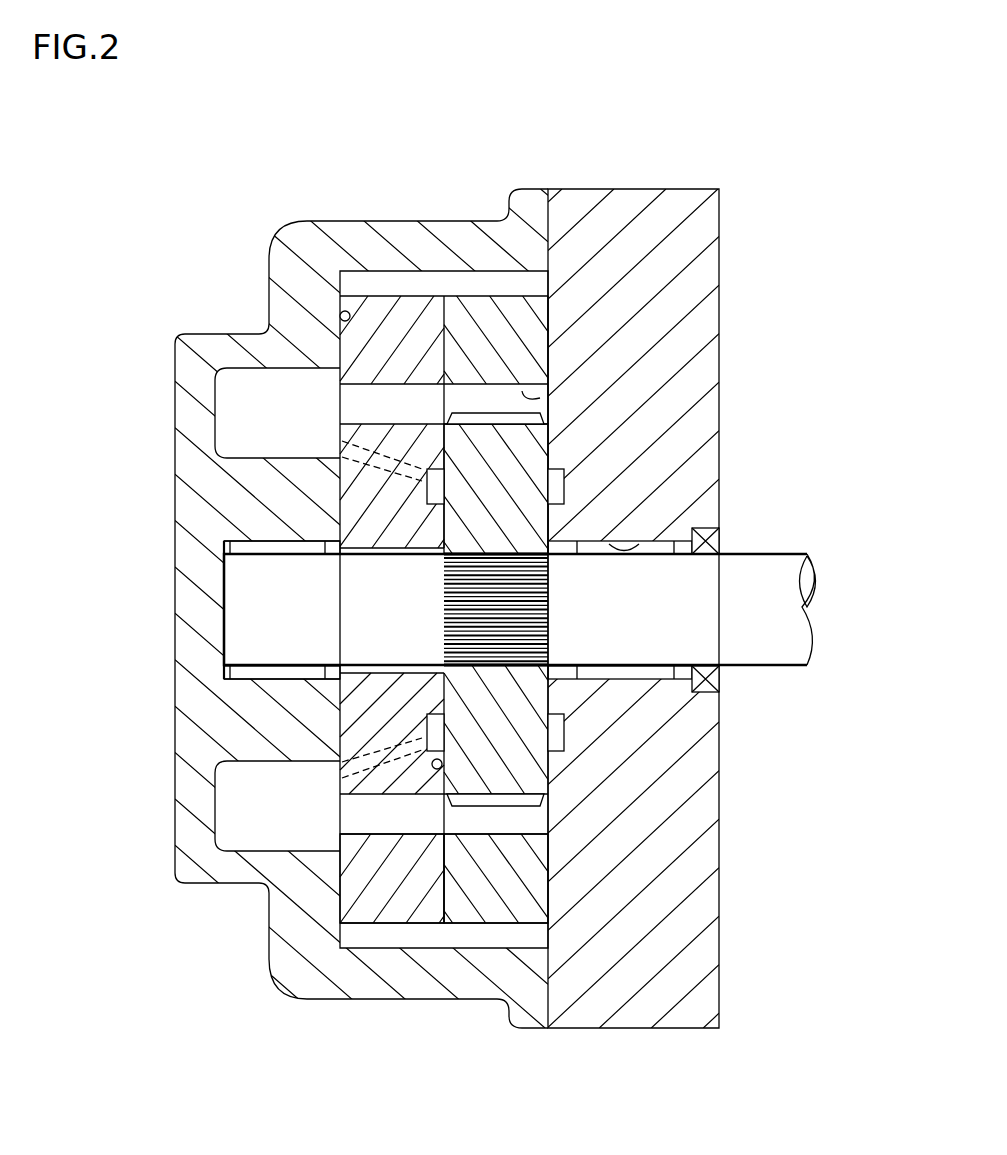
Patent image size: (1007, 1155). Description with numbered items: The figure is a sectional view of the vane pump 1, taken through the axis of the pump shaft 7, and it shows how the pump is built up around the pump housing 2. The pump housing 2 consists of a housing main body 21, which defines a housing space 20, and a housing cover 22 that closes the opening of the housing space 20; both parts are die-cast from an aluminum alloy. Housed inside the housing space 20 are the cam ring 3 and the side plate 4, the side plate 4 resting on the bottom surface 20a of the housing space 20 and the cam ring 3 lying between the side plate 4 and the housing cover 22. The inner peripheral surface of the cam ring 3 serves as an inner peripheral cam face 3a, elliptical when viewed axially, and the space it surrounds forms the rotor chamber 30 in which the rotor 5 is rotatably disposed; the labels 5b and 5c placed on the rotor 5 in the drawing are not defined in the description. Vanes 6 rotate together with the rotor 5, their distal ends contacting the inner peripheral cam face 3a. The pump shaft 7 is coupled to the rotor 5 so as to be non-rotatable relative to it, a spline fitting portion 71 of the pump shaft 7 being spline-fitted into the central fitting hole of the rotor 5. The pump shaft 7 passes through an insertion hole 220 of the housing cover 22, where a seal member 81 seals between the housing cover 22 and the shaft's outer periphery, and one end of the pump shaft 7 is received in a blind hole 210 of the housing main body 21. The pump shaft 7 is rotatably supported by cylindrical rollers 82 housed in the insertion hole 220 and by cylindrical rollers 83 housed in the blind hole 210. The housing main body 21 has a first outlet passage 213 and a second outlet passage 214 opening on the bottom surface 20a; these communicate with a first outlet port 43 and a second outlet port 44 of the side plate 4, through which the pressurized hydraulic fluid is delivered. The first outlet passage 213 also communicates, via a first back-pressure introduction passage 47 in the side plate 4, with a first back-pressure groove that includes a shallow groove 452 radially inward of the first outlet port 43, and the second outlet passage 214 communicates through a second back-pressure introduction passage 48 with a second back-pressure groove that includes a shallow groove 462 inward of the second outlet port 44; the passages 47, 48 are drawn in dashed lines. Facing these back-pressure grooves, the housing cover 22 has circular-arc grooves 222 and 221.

The vane pump 1 is at (447, 559).
The pump housing 2 is at (447, 559).
The housing main body 21 is at (527, 187).
The housing cover 22 is at (633, 580).
The housing space 20 is at (422, 270).
The bottom surface 20a is at (340, 311).
The cam ring 3 is at (452, 912).
The inner peripheral cam face 3a is at (547, 375).
The side plate 4 is at (405, 913).
The rotor 5 is at (524, 452).
The magnet upper end portion 5b is at (547, 458).
The magnet lower end portion 5c is at (440, 767).
The vanes 6 is at (533, 400).
The pump shaft 7 is at (790, 628).
The spline fitting portion 71 is at (547, 608).
The rotor chamber 30 is at (538, 817).
The first outlet port 43 is at (366, 812).
The second outlet port 44 is at (360, 407).
The first back-pressure introduction passage 47 is at (425, 750).
The second back-pressure introduction passage 48 is at (425, 470).
The shallow groove 452 is at (427, 722).
The shallow groove 462 is at (430, 491).
The seal member 81 is at (718, 540).
The cylindrical rollers 82 is at (655, 670).
The cylindrical rollers 83 is at (220, 665).
The blind hole 210 is at (222, 560).
The first outlet passage 213 is at (232, 812).
The second outlet passage 214 is at (228, 403).
The insertion hole 220 is at (625, 545).
The circular-arc groove 221 is at (553, 487).
The circular-arc groove 222 is at (553, 733).